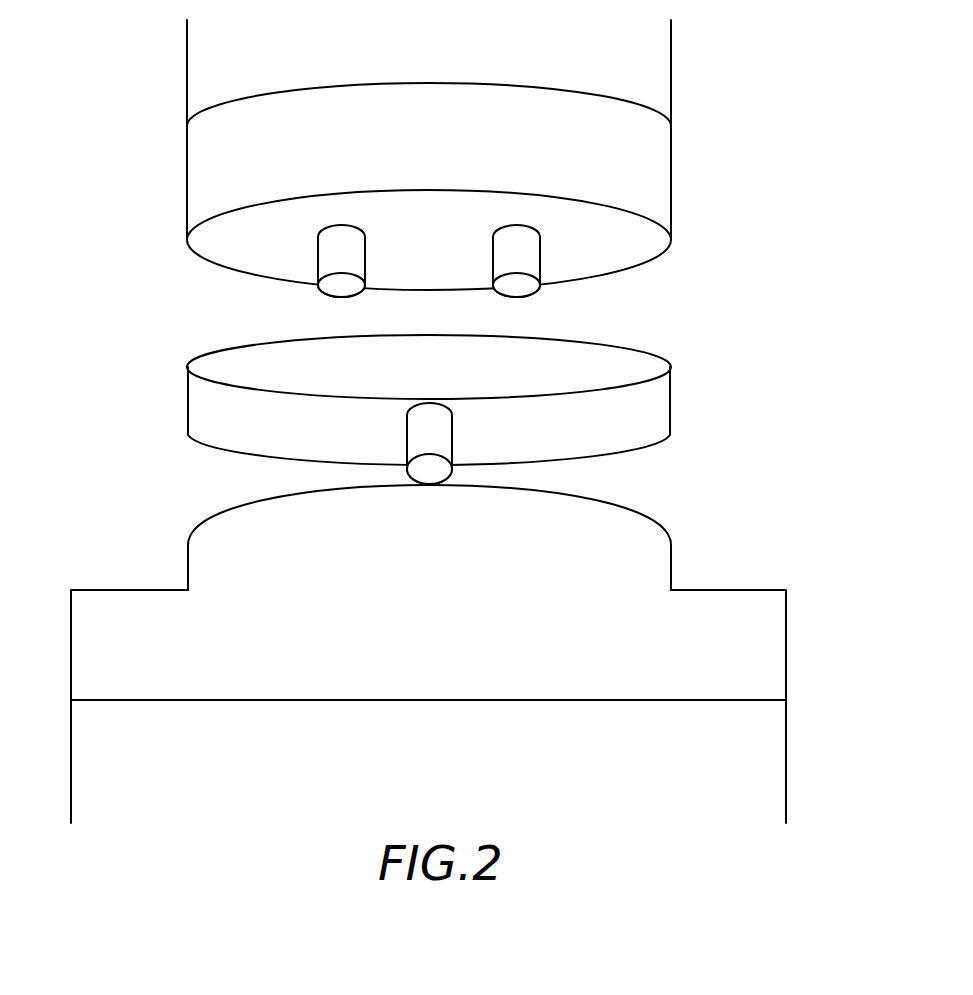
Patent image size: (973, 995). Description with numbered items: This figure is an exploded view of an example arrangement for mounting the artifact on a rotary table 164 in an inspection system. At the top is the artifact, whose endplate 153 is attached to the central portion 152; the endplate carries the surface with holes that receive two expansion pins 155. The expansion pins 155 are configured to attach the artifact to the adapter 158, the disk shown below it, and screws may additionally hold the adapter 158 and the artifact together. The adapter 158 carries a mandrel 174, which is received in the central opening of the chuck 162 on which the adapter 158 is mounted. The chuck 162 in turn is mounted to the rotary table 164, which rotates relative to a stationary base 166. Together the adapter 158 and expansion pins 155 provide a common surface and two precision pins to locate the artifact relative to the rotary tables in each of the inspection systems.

The central portion 152 is at (627, 60).
The endplate 153 is at (652, 173).
The expansion pins 155 is at (338, 260).
The adapter 158 is at (642, 385).
The mandrel 174 is at (418, 449).
The chuck 162 is at (623, 545).
The rotary table 164 is at (752, 636).
The stationary base 166 is at (737, 759).